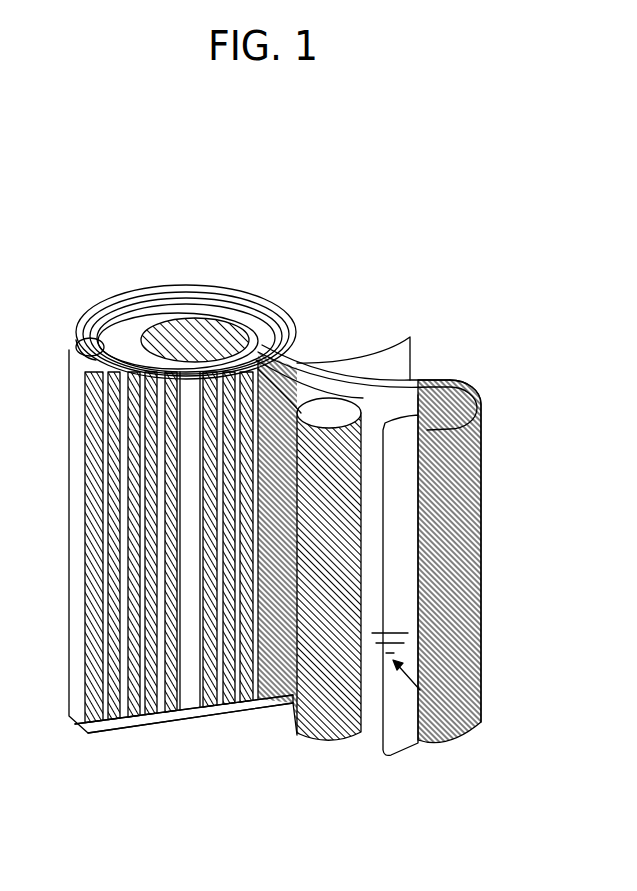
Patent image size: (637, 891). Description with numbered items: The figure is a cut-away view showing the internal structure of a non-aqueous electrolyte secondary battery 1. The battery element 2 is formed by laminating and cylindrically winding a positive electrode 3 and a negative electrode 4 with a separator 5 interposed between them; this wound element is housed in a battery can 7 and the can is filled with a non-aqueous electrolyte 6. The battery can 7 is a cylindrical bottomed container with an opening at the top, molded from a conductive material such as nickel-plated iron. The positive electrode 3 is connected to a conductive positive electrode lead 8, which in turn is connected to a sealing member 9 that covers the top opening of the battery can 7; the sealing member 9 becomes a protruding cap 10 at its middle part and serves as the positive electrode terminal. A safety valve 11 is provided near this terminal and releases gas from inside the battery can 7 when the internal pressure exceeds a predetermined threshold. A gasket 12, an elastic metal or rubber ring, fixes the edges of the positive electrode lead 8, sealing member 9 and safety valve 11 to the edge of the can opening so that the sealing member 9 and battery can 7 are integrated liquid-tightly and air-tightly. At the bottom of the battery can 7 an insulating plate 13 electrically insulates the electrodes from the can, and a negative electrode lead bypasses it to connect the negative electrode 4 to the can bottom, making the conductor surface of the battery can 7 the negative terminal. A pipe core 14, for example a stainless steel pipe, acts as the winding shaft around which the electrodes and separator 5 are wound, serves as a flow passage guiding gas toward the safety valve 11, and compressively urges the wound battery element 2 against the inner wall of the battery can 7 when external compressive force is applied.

The non-aqueous electrolyte secondary battery 1 is at (400, 283).
The battery element 2 is at (298, 793).
The positive electrode 3 is at (320, 745).
The negative electrode 4 is at (444, 728).
The separator 5 is at (402, 733).
The non-aqueous electrolyte 6 is at (481, 728).
The battery can 7 is at (68, 532).
The positive electrode lead 8 is at (90, 371).
The sealing member 9 is at (260, 297).
The protruding cap 10 is at (143, 282).
The safety valve 11 is at (216, 280).
The gasket 12 is at (76, 343).
The insulating plate 13 is at (98, 737).
The pipe core 14 is at (190, 722).